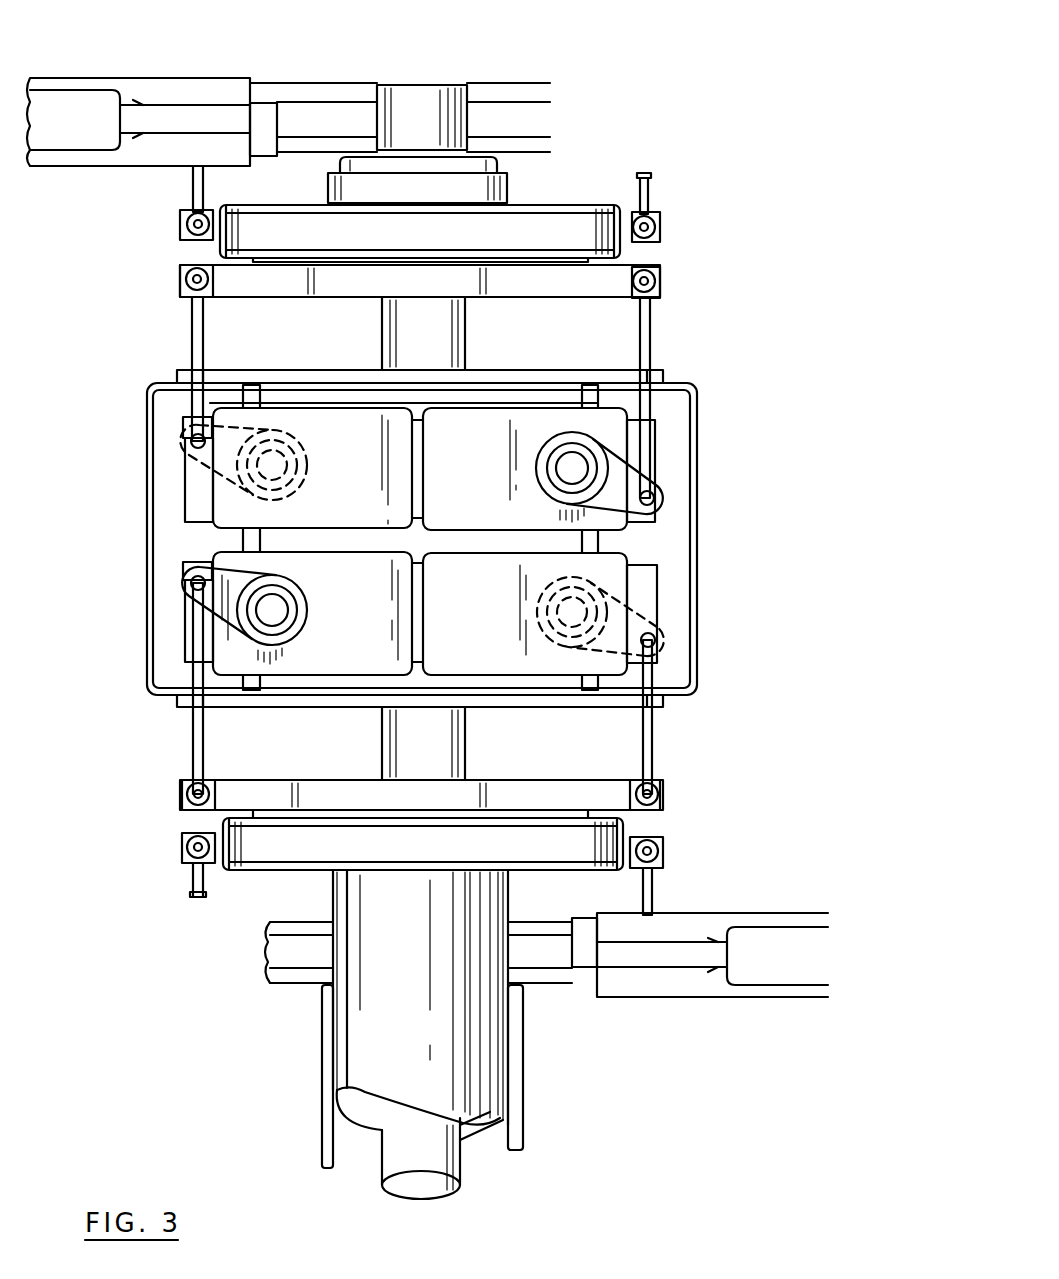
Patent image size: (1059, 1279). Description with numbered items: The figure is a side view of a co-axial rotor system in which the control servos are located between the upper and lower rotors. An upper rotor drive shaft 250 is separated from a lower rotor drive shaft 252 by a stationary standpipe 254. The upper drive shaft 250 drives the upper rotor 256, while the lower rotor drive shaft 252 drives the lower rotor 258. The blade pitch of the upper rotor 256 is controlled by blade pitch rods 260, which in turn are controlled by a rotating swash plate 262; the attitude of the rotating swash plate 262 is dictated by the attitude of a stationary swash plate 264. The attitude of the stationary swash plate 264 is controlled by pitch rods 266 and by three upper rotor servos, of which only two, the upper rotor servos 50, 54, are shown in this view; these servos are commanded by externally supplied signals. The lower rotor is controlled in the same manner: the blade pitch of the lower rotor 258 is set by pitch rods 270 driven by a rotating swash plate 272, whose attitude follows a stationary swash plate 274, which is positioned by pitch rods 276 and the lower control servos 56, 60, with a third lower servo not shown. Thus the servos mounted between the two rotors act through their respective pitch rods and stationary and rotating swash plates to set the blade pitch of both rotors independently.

The upper rotor servo 50 is at (360, 475).
The upper rotor servo 54 is at (484, 475).
The control servo 56 is at (362, 623).
The control servo 60 is at (484, 623).
The upper rotor drive shaft 250 is at (467, 335).
The lower rotor drive shaft 252 is at (527, 1098).
The stationary standpipe 254 is at (510, 1118).
The upper rotor 256 is at (185, 78).
The lower rotor 258 is at (690, 997).
The blade pitch rods 260 is at (193, 183).
The rotating swash plate 262 is at (660, 226).
The stationary swash plate 264 is at (660, 282).
The pitch rods 266 is at (192, 346).
The pitch rods 270 is at (193, 884).
The rotating swash plate 272 is at (183, 849).
The stationary swash plate 274 is at (183, 796).
The pitch rods 276 is at (193, 758).